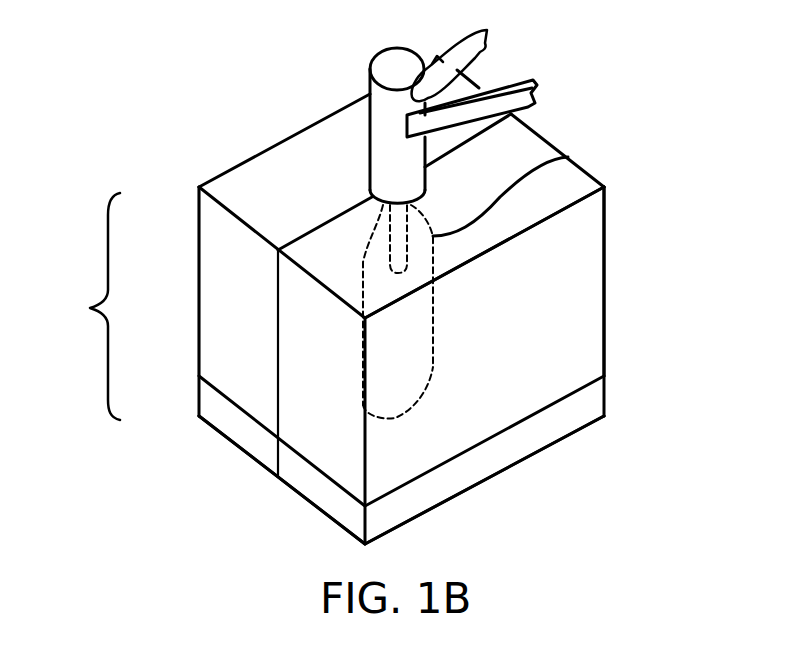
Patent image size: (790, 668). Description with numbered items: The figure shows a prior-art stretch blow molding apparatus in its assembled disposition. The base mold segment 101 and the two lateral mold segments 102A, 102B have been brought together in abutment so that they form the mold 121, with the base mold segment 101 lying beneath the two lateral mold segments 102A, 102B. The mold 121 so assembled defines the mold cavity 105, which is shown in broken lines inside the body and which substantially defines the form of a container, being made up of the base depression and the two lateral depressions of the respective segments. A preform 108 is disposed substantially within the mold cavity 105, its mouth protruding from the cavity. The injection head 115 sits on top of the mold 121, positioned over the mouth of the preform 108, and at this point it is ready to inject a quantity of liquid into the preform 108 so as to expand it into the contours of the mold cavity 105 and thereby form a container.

The base mold segment 101 is at (540, 437).
The lateral mold segment 102A is at (213, 288).
The lateral mold segment 102B is at (597, 287).
The mold cavity 105 is at (393, 405).
The preform 108 is at (568, 157).
The injection head 115 is at (370, 90).
The mold 121 is at (86, 306).